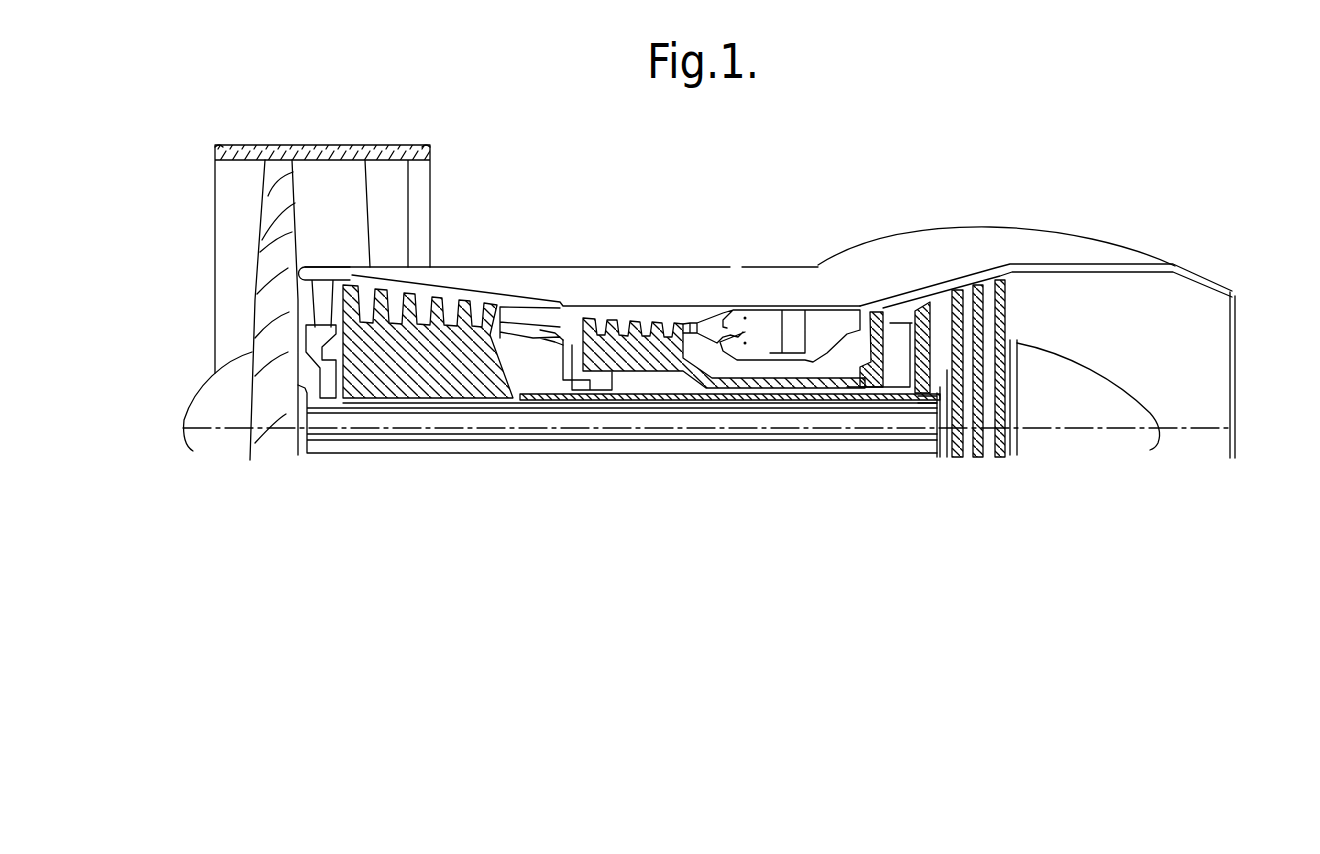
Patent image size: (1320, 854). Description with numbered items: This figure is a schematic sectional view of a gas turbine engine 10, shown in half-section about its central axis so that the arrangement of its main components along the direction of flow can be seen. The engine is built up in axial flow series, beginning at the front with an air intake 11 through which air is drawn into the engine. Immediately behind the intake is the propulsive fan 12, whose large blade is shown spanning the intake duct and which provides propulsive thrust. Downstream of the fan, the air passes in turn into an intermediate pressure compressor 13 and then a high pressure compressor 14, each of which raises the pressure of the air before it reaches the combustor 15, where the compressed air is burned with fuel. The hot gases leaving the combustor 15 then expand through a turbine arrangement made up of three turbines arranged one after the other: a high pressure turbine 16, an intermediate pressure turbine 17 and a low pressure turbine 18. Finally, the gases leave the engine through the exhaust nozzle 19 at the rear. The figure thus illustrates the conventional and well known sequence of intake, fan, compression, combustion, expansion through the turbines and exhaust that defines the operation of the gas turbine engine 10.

The gas turbine engine 10 is at (581, 224).
The air intake 11 is at (200, 271).
The propulsive fan 12 is at (282, 190).
The intermediate pressure compressor 13 is at (418, 356).
The high pressure compressor 14 is at (633, 317).
The combustor 15 is at (795, 290).
The high pressure turbine 16 is at (878, 303).
The intermediate pressure turbine 17 is at (925, 300).
The low pressure turbine 18 is at (1000, 290).
The exhaust nozzle 19 is at (1210, 377).